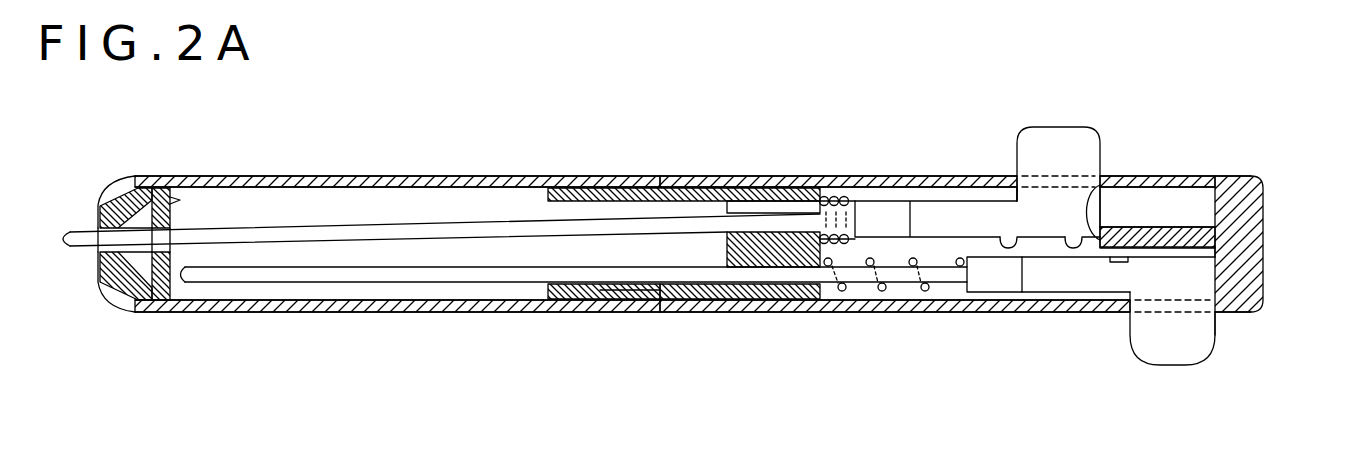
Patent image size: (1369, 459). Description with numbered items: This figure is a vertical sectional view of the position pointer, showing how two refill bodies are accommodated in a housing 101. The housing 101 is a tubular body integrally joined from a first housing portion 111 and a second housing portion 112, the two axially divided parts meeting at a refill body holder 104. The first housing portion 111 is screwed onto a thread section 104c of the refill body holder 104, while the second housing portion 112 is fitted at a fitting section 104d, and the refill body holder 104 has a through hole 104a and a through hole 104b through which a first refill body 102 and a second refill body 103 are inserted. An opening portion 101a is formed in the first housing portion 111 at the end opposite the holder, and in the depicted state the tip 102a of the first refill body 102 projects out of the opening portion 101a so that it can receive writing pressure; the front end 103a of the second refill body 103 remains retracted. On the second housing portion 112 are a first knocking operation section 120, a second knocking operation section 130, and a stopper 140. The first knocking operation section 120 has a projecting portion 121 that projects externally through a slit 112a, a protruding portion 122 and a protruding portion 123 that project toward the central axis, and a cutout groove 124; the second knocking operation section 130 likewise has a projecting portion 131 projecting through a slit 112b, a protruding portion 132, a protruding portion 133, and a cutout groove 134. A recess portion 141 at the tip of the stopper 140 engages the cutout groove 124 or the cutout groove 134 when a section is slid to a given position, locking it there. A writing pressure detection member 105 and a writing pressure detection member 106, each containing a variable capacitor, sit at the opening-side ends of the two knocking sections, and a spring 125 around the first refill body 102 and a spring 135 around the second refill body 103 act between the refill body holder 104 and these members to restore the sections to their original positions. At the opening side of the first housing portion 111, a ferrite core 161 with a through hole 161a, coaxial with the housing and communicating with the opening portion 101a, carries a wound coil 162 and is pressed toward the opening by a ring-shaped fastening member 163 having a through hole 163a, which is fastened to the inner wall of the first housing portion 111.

The housing 101 is at (590, 112).
The opening portion 101a is at (103, 250).
The first refill body 102 is at (263, 236).
The tip of the first refill body 102a is at (70, 228).
The second refill body 103 is at (360, 278).
The tube front end 103a is at (193, 278).
The refill body holder 104 is at (750, 303).
The through hole 104a is at (782, 207).
The through hole 104b is at (793, 303).
The thread section 104c is at (573, 306).
The fitting section 104d is at (678, 303).
The writing pressure detection member 105 is at (895, 215).
The writing pressure detection member 106 is at (992, 282).
The first housing portion 111 is at (610, 177).
The second housing portion 112 is at (708, 177).
The slit 112a is at (1173, 177).
The slit 112b is at (1053, 303).
The first knocking operation section 120 is at (1022, 118).
The projecting portion 121 is at (1035, 147).
The protruding portion 122 is at (1005, 237).
The protruding portion 123 is at (1073, 237).
The cutout groove 124 is at (1100, 228).
The spring 125 is at (843, 205).
The second knocking operation section 130 is at (1213, 365).
The projecting portion 131 is at (1178, 368).
The protruding portion 132 is at (1120, 262).
The protruding portion 133 is at (1227, 242).
The cutout groove 134 is at (1213, 255).
The spring 135 is at (891, 296).
The stopper 140 is at (1202, 240).
The recess portion 141 is at (1120, 232).
The ferrite core 161 is at (126, 192).
The through hole 161a is at (115, 297).
The coil 162 is at (142, 308).
The fastening member 163 is at (160, 294).
The through hole 163a is at (173, 212).